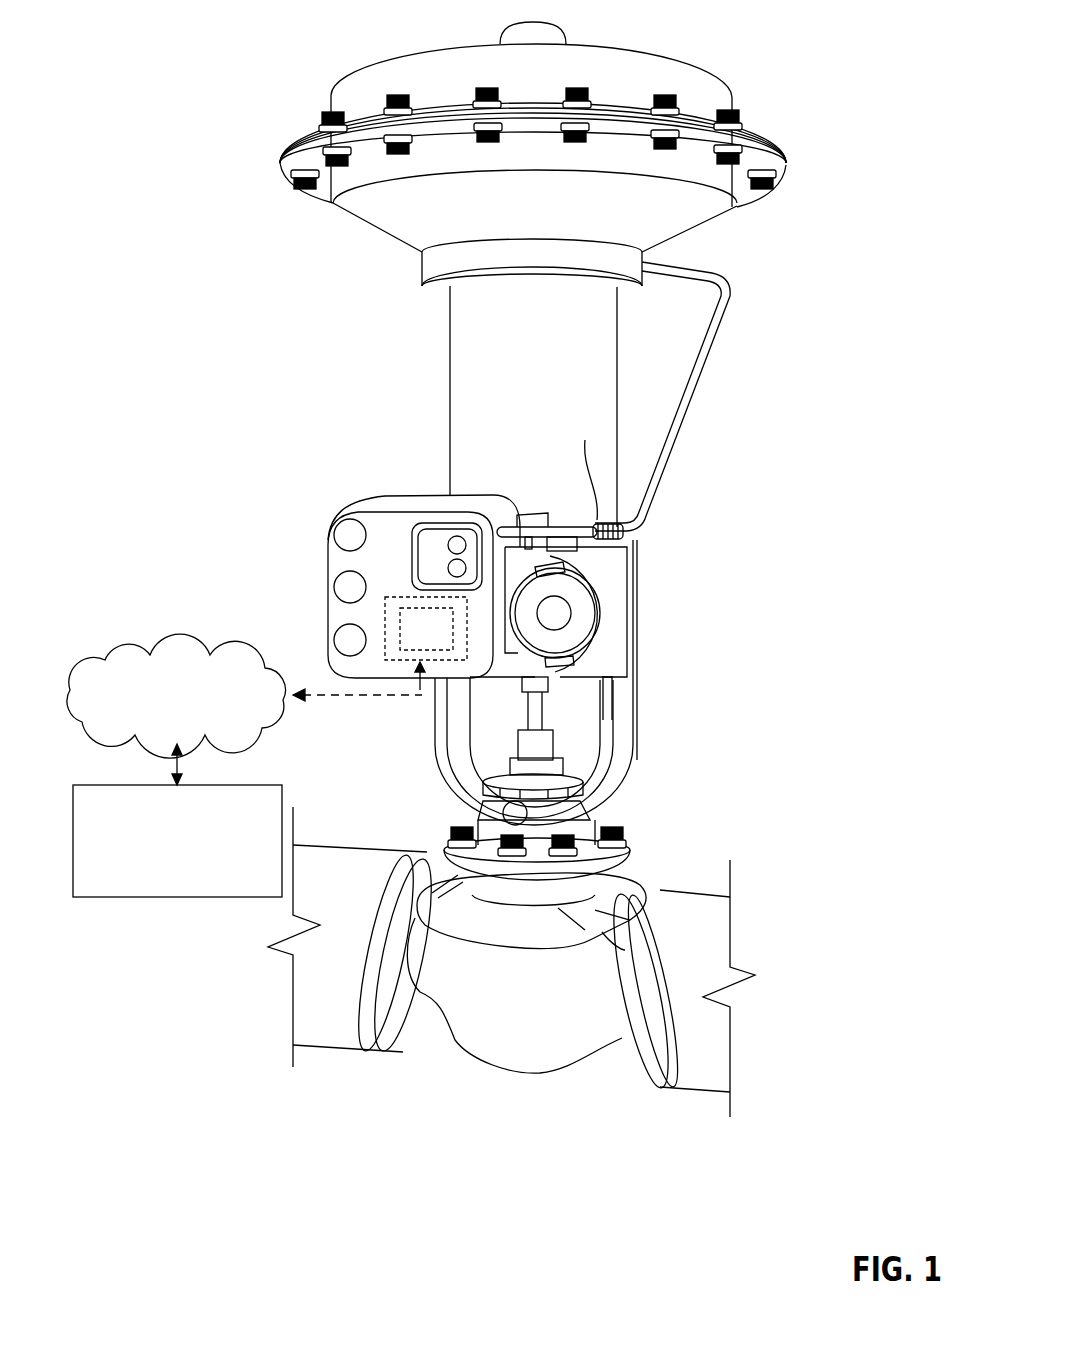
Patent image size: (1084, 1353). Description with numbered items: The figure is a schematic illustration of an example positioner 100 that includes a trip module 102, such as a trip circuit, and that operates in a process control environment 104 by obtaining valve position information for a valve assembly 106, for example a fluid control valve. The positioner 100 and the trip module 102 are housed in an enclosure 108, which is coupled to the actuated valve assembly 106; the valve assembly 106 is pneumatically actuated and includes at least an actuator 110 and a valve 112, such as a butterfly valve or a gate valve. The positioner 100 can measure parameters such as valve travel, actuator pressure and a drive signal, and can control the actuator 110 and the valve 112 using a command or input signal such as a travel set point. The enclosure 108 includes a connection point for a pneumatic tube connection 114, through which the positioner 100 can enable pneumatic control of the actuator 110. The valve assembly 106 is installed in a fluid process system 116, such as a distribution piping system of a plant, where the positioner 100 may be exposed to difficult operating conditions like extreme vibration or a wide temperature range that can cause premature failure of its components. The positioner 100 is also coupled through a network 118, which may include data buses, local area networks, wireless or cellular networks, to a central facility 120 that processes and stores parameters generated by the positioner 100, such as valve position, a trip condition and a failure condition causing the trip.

The positioner 100 is at (387, 627).
The trip module 102 is at (417, 608).
The process control environment 104 is at (726, 457).
The valve assembly 106 is at (447, 413).
The enclosure 108 is at (327, 537).
The actuator 110 is at (382, 62).
The valve 112 is at (423, 897).
The pneumatic tube connection 114 is at (713, 342).
The fluid process system 116 is at (679, 836).
The network 118 is at (170, 647).
The central facility 120 is at (198, 883).